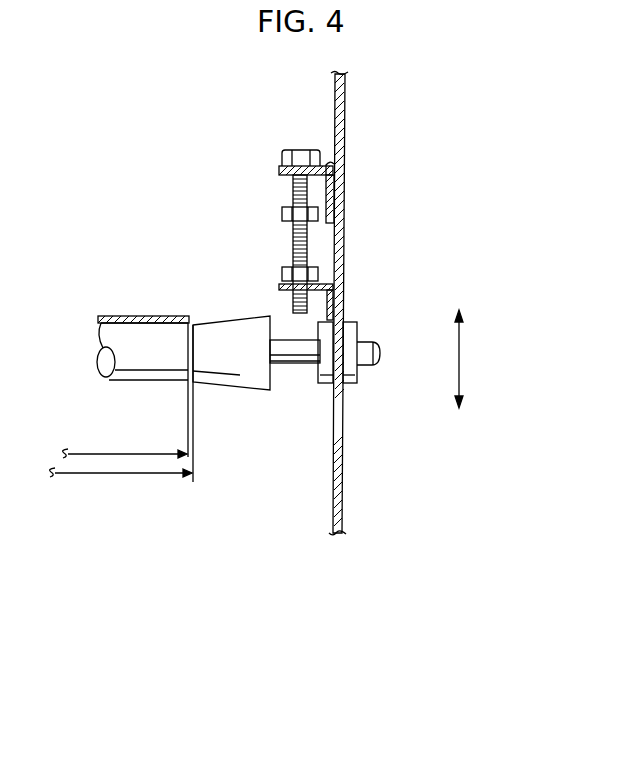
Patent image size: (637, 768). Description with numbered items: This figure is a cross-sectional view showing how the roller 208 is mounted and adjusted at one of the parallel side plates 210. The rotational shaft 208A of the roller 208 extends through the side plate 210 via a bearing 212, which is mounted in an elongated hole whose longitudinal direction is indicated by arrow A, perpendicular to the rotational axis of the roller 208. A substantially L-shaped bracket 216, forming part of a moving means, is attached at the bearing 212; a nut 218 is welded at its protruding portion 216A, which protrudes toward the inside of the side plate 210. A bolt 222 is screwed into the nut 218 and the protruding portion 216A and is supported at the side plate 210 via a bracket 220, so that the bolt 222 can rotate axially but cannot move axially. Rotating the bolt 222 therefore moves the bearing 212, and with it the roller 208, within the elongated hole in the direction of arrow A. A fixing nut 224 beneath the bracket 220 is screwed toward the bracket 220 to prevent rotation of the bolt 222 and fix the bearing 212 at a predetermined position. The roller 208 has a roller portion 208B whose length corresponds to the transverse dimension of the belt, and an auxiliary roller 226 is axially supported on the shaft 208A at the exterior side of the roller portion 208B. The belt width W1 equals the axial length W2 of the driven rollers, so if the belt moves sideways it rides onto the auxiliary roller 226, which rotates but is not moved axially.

The side plate 210 is at (346, 92).
The bracket 220 is at (340, 158).
The bolt 222 is at (298, 150).
The fixing nut 224 is at (289, 212).
The nut 218 is at (286, 272).
The L-shaped bracket 216 is at (330, 283).
The protruding portion 216A is at (276, 291).
The bearing 212 is at (350, 322).
The roller 208 is at (132, 313).
The roller portion 208B is at (146, 373).
The auxiliary roller 226 is at (230, 374).
The rotational shaft 208A is at (290, 366).
The width of the belt W1 is at (141, 458).
The axial length of the driven rollers W2 is at (90, 475).
The direction of arrow A is at (460, 360).